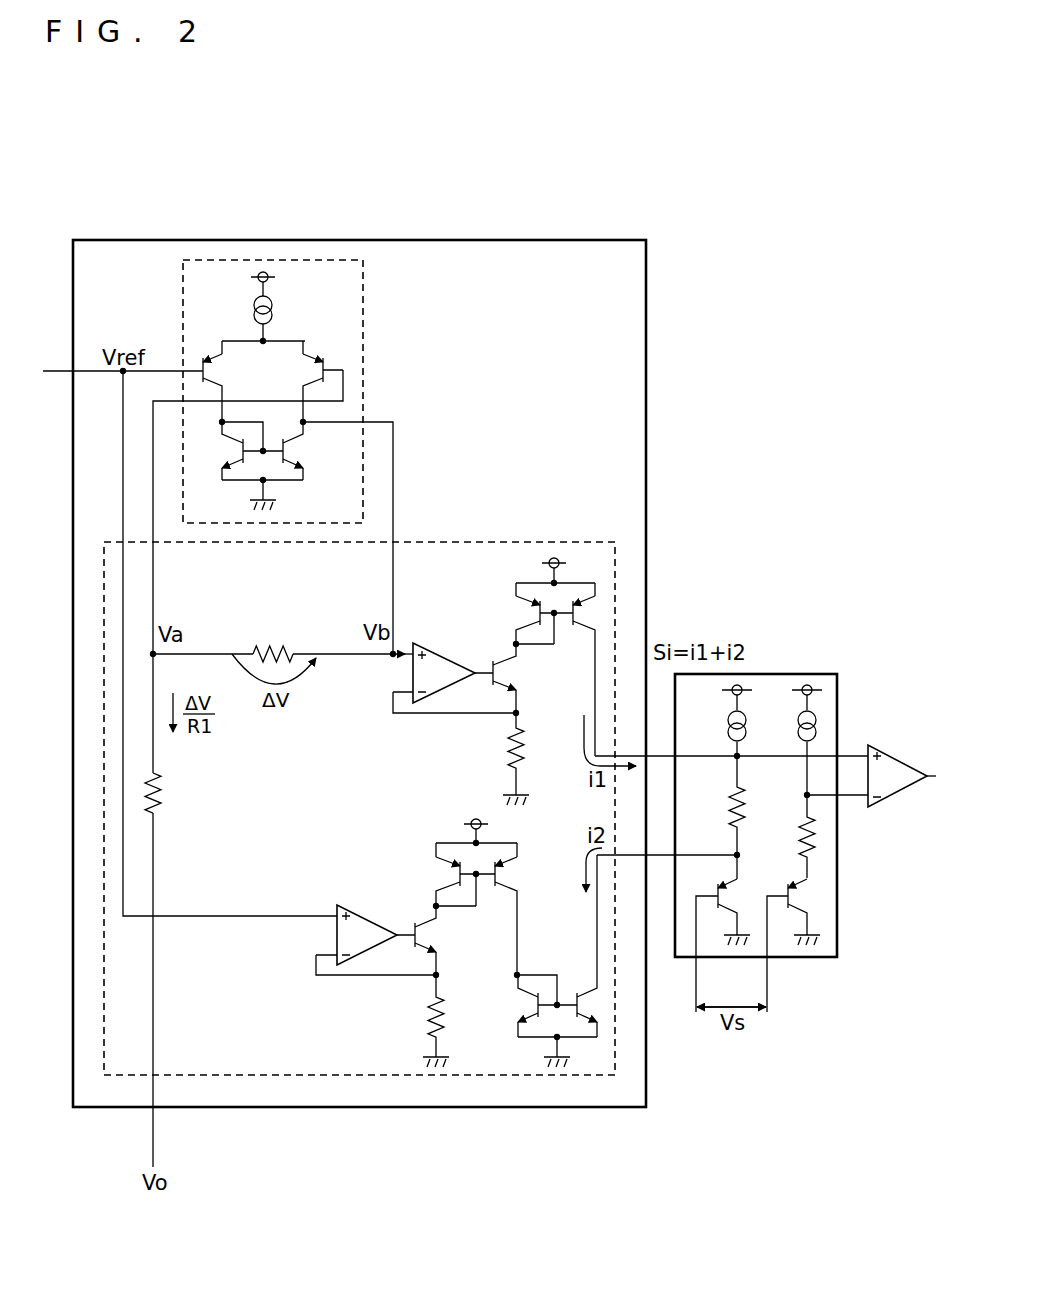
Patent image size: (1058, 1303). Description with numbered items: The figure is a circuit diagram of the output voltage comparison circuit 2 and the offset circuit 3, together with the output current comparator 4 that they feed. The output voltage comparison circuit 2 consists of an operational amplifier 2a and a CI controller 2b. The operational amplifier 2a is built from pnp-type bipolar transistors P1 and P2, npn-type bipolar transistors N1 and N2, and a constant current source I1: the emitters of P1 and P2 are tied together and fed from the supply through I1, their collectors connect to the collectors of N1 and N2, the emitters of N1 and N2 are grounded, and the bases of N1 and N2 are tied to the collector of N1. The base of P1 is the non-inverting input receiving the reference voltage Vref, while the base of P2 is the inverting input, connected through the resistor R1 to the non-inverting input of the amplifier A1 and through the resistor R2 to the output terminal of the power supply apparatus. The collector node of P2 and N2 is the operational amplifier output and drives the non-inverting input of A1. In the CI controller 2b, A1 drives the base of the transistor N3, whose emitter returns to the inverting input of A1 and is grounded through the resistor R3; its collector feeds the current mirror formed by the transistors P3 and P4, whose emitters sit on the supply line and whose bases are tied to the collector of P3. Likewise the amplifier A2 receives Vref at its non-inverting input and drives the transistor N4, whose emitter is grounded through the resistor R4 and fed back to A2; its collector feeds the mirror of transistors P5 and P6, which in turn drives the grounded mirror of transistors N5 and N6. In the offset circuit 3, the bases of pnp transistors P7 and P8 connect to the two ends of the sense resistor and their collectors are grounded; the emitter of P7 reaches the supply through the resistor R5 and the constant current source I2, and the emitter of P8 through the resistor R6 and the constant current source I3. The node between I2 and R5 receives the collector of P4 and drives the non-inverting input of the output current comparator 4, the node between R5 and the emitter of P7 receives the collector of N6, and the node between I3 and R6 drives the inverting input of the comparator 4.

The output voltage comparison circuit 2 is at (357, 240).
The operational amplifier 2a is at (364, 345).
The CI controller 2b is at (502, 542).
The offset circuit 3 is at (806, 673).
The output current comparator 4 is at (894, 757).
The constant current source I1 is at (273, 310).
The constant current source I2 is at (727, 728).
The constant current source I3 is at (799, 728).
The pnp-type bipolar transistor P1 is at (221, 381).
The pnp-type bipolar transistor P2 is at (313, 381).
The pnp-type bipolar transistor P3 is at (526, 613).
The pnp-type bipolar transistor P4 is at (592, 669).
The pnp-type bipolar transistor P5 is at (446, 874).
The pnp-type bipolar transistor P6 is at (514, 909).
The pnp-type bipolar transistor P7 is at (726, 933).
The pnp-type bipolar transistor P8 is at (796, 945).
The npn-type bipolar transistor N1 is at (224, 451).
The npn-type bipolar transistor N2 is at (305, 451).
The npn-type bipolar transistor N3 is at (514, 678).
The npn-type bipolar transistor N4 is at (436, 940).
The npn-type bipolar transistor N5 is at (519, 1006).
The npn-type bipolar transistor N6 is at (596, 946).
The resistor R1 is at (274, 646).
The resistor R2 is at (161, 795).
The resistor R3 is at (527, 757).
The resistor R4 is at (426, 1015).
The resistor R5 is at (727, 808).
The resistor R6 is at (798, 838).
The amplifier A1 is at (452, 647).
The amplifier A2 is at (382, 909).